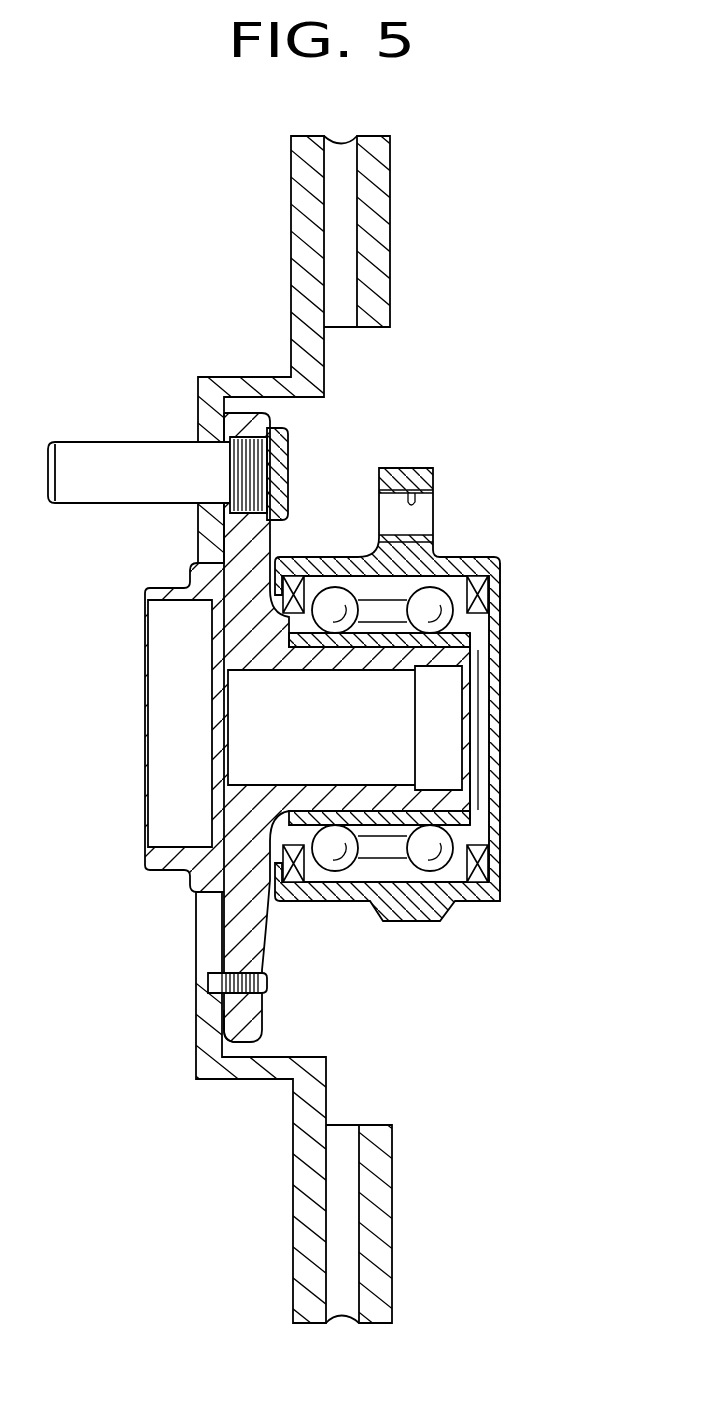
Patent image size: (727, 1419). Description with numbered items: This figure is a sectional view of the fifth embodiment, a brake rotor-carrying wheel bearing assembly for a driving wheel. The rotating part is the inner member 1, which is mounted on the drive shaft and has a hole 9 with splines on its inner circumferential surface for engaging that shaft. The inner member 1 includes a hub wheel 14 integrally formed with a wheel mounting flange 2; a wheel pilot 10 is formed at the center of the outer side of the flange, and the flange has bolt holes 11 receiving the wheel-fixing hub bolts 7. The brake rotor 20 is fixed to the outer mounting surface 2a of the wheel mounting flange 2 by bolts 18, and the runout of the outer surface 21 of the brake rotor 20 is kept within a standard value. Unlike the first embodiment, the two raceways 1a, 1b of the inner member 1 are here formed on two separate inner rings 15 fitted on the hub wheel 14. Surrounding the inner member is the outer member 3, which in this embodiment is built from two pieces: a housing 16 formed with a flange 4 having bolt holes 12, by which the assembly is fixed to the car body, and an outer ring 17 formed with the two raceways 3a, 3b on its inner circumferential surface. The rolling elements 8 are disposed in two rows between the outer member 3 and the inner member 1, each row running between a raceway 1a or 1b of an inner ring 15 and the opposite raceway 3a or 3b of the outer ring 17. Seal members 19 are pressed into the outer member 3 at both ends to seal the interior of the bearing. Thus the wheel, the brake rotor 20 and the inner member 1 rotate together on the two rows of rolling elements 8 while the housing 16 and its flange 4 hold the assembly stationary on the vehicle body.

The inner member 1 is at (150, 586).
The outer raceway of the inner member 1a is at (325, 640).
The inner raceway of the inner member 1b is at (478, 640).
The wheel mounting flange 2 is at (248, 1013).
The outer mounting surface 2a is at (222, 1025).
The outer member 3 is at (434, 479).
The raceway of the outer member 3a is at (334, 594).
The raceway of the outer member 3b is at (470, 598).
The flange 4 is at (381, 480).
The hub bolt 7 is at (155, 467).
The rolling elements 8 is at (397, 643).
The hole 9 is at (380, 778).
The wheel pilot 10 is at (170, 862).
The bolt hole 11 is at (243, 477).
The bolt hole 12 is at (412, 500).
The hub wheel 14 is at (437, 667).
The inner ring 15 is at (440, 658).
The housing 16 is at (480, 568).
The outer ring 17 is at (446, 582).
The bolt 18 is at (205, 975).
The seal member 19 is at (496, 602).
The brake rotor 20 is at (310, 1208).
The outer surface of the brake rotor 21 is at (395, 1290).